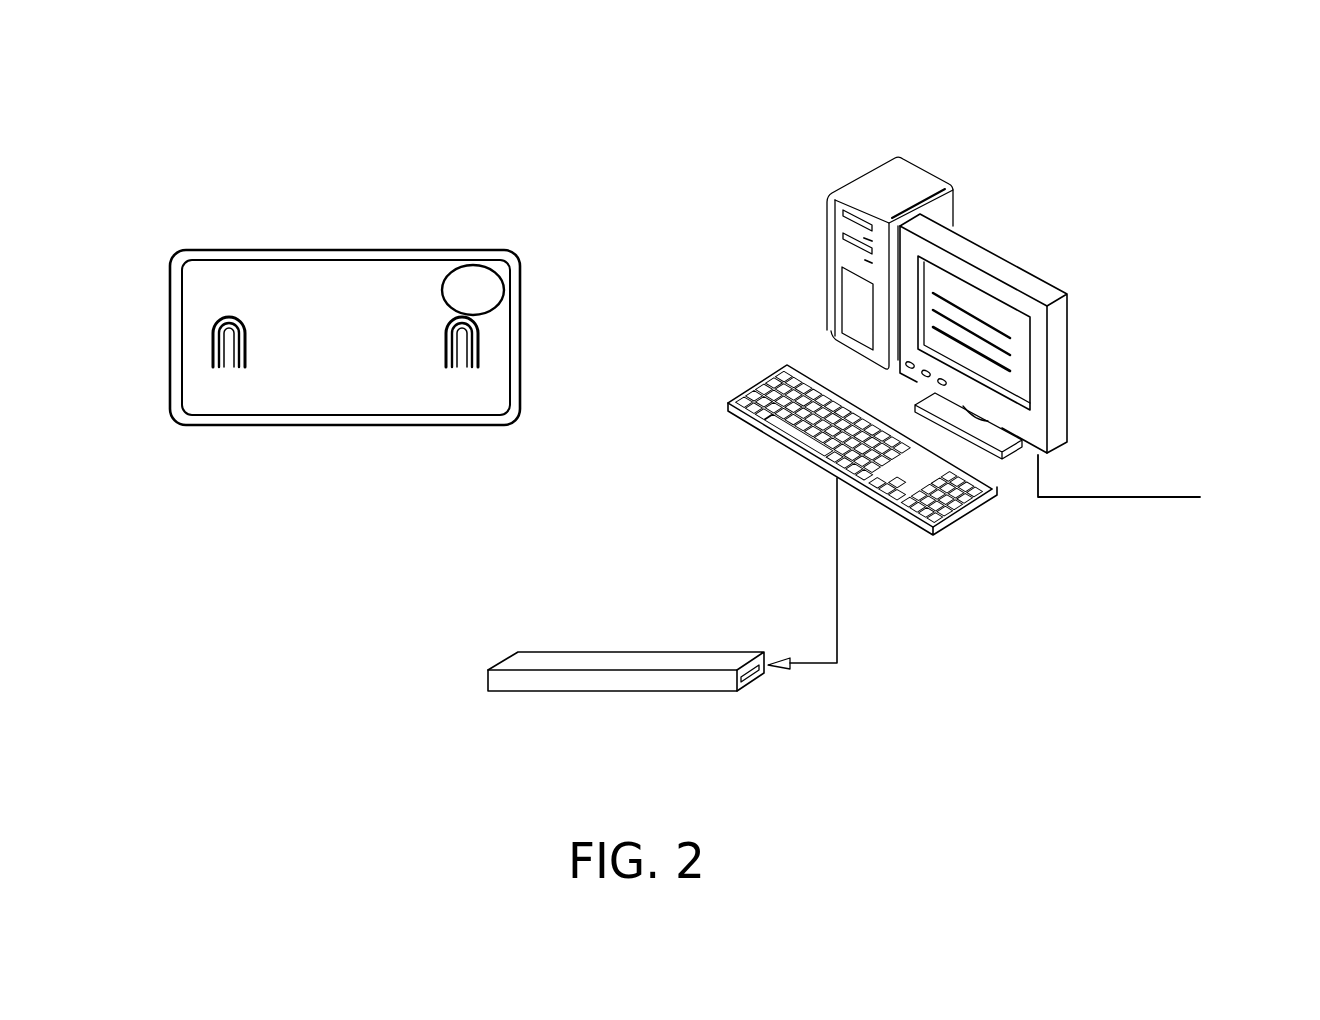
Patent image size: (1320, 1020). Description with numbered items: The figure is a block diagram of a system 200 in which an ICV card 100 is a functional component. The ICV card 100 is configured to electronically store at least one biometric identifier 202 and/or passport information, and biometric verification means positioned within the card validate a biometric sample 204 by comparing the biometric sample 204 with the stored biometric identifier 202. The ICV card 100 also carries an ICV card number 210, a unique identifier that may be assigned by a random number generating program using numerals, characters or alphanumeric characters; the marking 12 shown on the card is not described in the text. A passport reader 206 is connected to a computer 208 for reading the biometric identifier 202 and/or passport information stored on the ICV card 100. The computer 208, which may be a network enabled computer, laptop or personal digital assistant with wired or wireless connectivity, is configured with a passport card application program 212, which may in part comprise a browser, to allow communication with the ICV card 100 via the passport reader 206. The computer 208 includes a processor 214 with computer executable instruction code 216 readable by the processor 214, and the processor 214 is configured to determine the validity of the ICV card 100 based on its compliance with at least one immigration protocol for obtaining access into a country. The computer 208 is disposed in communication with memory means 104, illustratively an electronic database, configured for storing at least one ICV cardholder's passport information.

The system 200 is at (752, 114).
The ICV card 100 is at (323, 247).
The biometric identifier 202 is at (228, 313).
The biometric sample 204 is at (480, 347).
The identification mark 12 is at (473, 290).
The ICV card number 210 is at (505, 291).
The memory means 104 is at (833, 240).
The passport card application program 212 is at (1003, 333).
The processor 214 is at (1058, 362).
The computer executable instruction code 216 is at (1018, 378).
The computer 208 is at (1148, 486).
The passport reader 206 is at (573, 680).